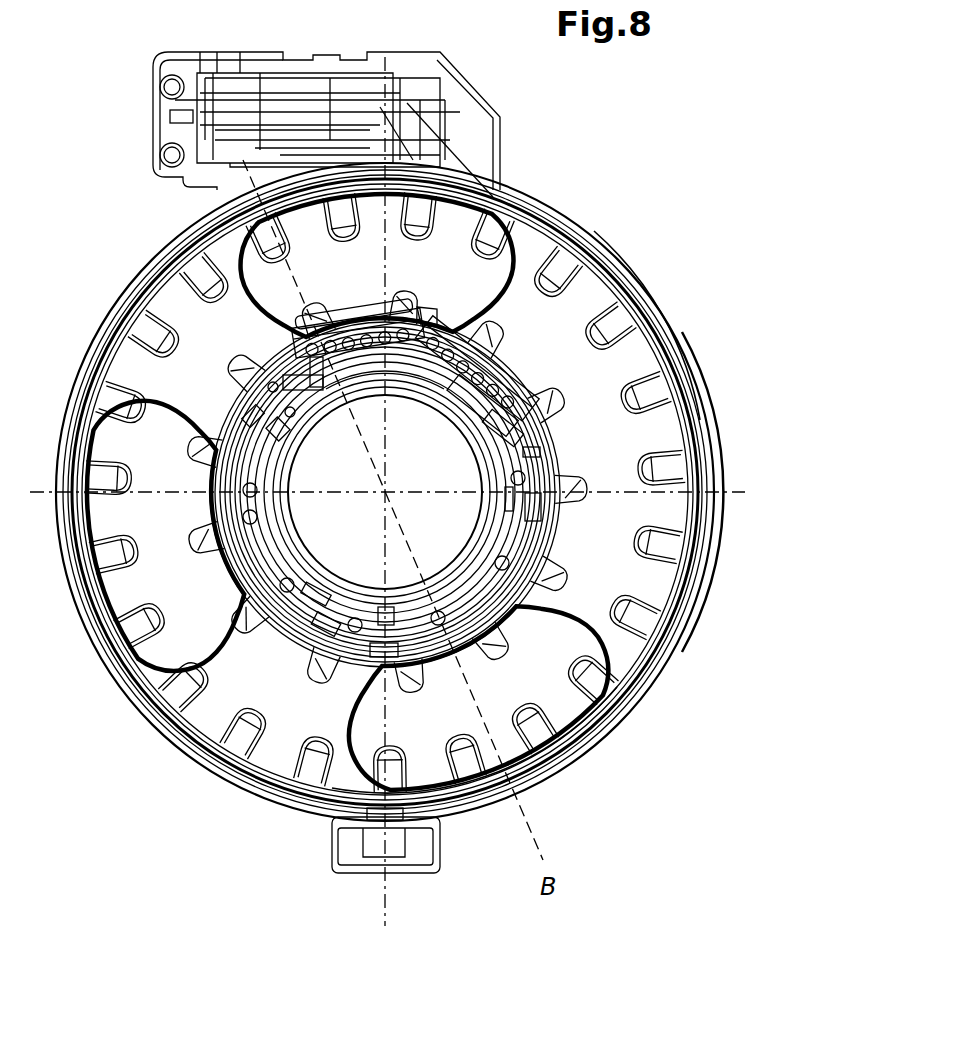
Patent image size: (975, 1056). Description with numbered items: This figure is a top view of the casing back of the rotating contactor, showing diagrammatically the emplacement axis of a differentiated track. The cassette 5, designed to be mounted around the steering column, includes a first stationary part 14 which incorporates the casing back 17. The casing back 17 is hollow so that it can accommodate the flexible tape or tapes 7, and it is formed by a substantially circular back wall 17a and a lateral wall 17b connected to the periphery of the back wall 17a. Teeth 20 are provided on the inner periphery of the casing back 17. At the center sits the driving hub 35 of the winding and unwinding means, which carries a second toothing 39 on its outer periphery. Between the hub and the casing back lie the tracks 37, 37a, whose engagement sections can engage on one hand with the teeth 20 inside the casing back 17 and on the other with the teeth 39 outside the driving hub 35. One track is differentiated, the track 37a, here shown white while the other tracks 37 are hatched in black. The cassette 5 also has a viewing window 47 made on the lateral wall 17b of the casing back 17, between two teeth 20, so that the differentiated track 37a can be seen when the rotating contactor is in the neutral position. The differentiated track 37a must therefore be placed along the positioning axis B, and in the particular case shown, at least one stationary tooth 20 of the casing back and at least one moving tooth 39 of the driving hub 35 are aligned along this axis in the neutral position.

The cassette 5 is at (676, 232).
The first stationary part 14 is at (698, 306).
The casing back 17 is at (737, 423).
The back wall 17a is at (670, 440).
The lateral wall 17b is at (690, 363).
The flexible tape 7 is at (680, 617).
The tracks 37 is at (540, 262).
The differentiated track 37a is at (615, 665).
The teeth 20 is at (223, 712).
The second toothing 39 is at (310, 663).
The driving hub 35 is at (250, 443).
The viewing window 47 is at (525, 800).